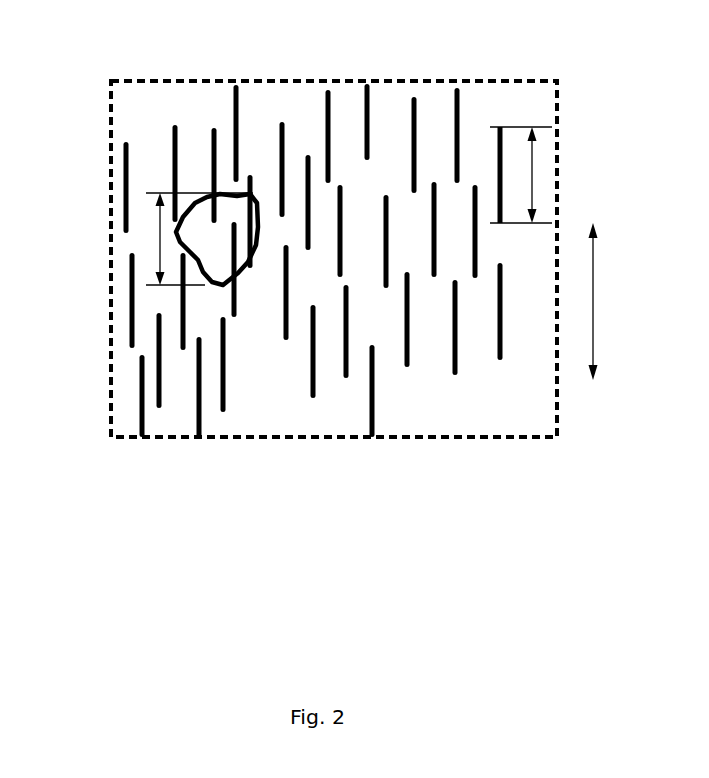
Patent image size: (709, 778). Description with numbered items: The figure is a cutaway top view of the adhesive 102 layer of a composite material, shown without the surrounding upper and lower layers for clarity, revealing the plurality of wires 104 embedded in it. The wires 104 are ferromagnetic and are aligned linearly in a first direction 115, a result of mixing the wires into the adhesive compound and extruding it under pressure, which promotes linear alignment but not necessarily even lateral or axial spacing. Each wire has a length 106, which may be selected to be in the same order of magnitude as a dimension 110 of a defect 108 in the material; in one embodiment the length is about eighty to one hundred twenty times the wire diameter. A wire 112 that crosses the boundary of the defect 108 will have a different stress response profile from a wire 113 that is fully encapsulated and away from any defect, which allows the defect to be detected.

The adhesive 102 is at (202, 78).
The wires 104 is at (464, 408).
The length 106 is at (537, 188).
The defect 108 is at (222, 290).
The dimension 110 is at (157, 239).
The wire 112 is at (238, 302).
The wire 113 is at (317, 385).
The first direction 115 is at (592, 336).